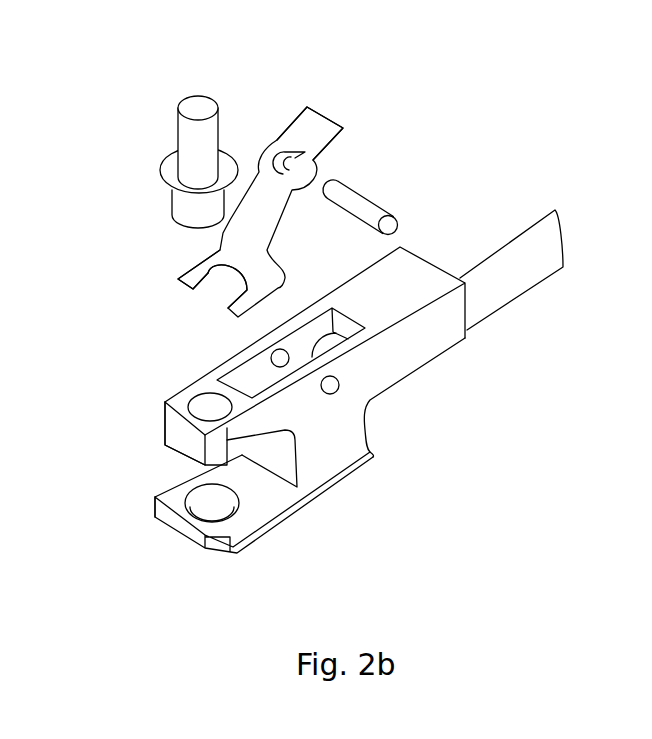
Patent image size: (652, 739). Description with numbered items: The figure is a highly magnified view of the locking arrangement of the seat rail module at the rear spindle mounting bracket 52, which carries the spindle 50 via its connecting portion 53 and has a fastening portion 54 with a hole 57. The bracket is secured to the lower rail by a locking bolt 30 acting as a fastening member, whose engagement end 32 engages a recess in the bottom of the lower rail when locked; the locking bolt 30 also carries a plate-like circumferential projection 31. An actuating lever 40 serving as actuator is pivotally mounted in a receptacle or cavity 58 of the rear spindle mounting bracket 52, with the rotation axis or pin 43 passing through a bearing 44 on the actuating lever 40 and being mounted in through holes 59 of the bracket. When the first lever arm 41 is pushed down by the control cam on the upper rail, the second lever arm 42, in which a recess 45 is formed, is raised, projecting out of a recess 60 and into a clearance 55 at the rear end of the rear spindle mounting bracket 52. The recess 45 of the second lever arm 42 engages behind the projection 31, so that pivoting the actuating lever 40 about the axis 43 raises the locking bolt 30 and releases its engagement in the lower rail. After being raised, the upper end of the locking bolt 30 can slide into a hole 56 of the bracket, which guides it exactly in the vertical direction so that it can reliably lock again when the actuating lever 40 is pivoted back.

The locking bolt 30 is at (192, 140).
The projection 31 is at (160, 170).
The engagement end of locking bolt 32 is at (187, 210).
The actuating lever 40 is at (260, 228).
The first lever arm of actuating lever 41 is at (312, 123).
The second lever arm of actuating lever 42 is at (205, 268).
The rotation axis/pin 43 is at (360, 203).
The bearing for rotation axis 44 is at (273, 145).
The recess 45 is at (213, 288).
The spindle 50 is at (547, 238).
The rear spindle mounting bracket 52 is at (372, 392).
The connecting portion 53 is at (415, 268).
The fastening portion 54 is at (270, 517).
The clearance 55 is at (150, 477).
The hole 56 is at (205, 408).
The hole 57 is at (210, 503).
The receptacle 58 is at (333, 338).
The through hole 59 is at (330, 394).
The recess 60 is at (280, 455).